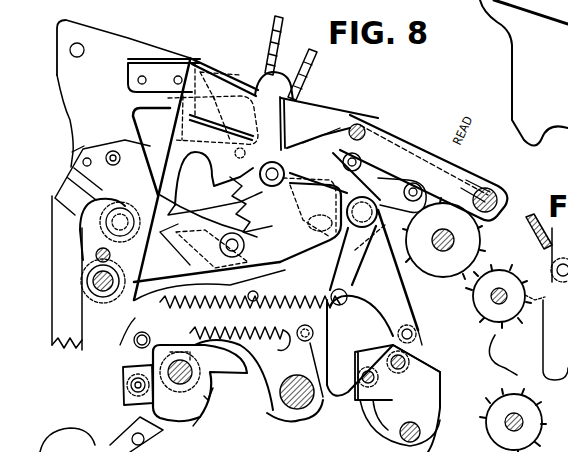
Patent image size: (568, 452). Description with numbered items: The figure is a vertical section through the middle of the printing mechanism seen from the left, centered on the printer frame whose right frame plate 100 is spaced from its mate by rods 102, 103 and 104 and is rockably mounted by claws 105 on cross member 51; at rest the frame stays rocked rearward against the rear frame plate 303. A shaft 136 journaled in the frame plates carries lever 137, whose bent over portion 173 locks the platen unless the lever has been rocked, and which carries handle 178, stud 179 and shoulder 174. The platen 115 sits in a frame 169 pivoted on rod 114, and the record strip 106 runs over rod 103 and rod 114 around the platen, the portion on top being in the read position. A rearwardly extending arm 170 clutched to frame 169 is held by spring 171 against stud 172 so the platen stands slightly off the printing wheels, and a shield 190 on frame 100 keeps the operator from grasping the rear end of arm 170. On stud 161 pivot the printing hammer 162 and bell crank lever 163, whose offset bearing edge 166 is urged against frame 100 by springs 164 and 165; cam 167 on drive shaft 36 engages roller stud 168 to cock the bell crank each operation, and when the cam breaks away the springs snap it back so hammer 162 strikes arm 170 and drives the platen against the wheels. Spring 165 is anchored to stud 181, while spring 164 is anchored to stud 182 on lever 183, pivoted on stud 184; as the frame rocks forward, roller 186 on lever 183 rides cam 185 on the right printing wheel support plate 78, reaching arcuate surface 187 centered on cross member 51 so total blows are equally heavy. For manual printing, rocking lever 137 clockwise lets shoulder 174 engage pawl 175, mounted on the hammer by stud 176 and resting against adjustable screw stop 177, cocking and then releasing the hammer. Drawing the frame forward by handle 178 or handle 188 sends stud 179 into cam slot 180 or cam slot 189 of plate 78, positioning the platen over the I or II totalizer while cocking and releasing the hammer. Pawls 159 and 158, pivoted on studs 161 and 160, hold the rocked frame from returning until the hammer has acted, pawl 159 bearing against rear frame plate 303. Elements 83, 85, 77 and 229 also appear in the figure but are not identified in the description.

The right frame plate 100 is at (109, 30).
The rod 102 is at (70, 50).
The shield 190 is at (165, 58).
The bent over portion 173 is at (200, 60).
The handle 188 is at (275, 26).
The handle 178 is at (320, 50).
The stud 179 is at (294, 150).
The record strip 106 is at (338, 115).
The rod 103 is at (352, 124).
The rearwardly extending arm 170 is at (317, 152).
The rod 114 is at (383, 128).
The platen frame 169 is at (426, 143).
The platen 115 is at (488, 186).
The pawl 158 is at (82, 150).
The stud 160 is at (112, 150).
The pawl 159 is at (82, 166).
The rear frame plate 303 is at (56, 197).
The stud 172 is at (180, 126).
The lever 137 is at (166, 146).
The shoulder 174 is at (229, 176).
The spring 171 is at (216, 208).
The pawl 175 is at (255, 206).
The adjustable screw stop 177 is at (204, 246).
The stud 161 is at (98, 228).
The rod 104 is at (95, 256).
The shaft 136 is at (91, 278).
The stud 176 is at (251, 292).
The printing hammer 162 is at (296, 260).
The cam slot 180 is at (310, 226).
The stud 184 is at (353, 238).
The stud 182 is at (341, 292).
The lever 183 is at (395, 286).
The gear 83 is at (440, 232).
The gear 85 is at (504, 280).
The offset bearing edge 166 is at (190, 305).
The spring 164 is at (236, 305).
The bell crank lever 163 is at (135, 321).
The roller stud 168 is at (128, 360).
The drive shaft 36 is at (200, 383).
The spring 165 is at (282, 339).
The stud 181 is at (305, 342).
The claws 105 is at (270, 412).
The cross member 51 is at (316, 412).
The cam 167 is at (207, 429).
The cam 185 is at (441, 380).
The arcuate surface 187 is at (440, 434).
The roller 186 is at (417, 334).
The cam slot 189 is at (428, 296).
The shaft 77 is at (400, 432).
The right printing wheel support plate 78 is at (494, 369).
The arm 229 is at (30, 446).